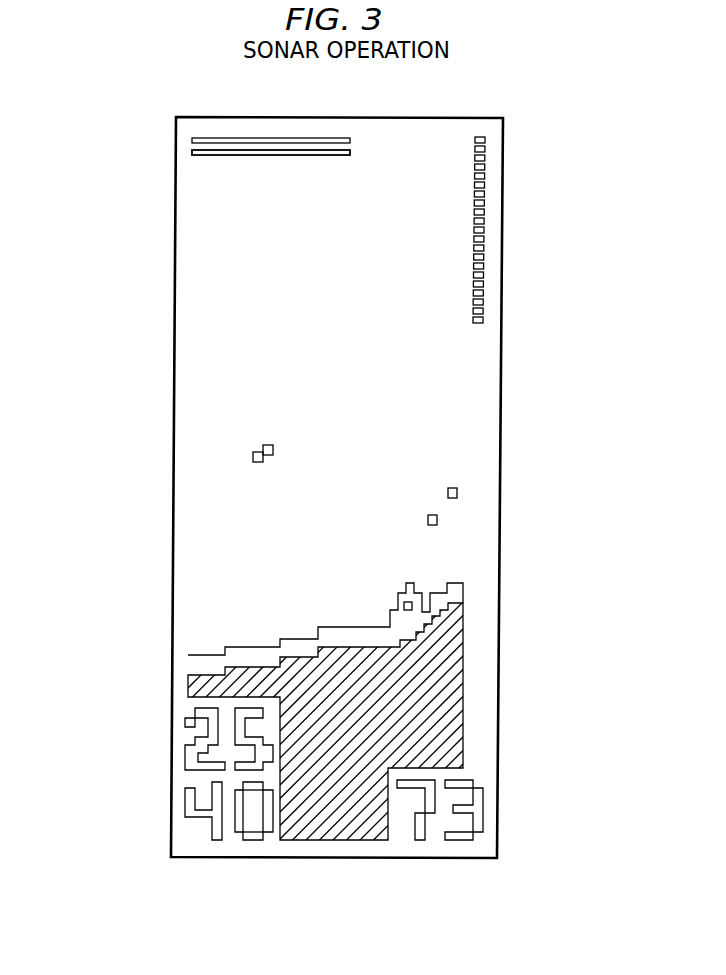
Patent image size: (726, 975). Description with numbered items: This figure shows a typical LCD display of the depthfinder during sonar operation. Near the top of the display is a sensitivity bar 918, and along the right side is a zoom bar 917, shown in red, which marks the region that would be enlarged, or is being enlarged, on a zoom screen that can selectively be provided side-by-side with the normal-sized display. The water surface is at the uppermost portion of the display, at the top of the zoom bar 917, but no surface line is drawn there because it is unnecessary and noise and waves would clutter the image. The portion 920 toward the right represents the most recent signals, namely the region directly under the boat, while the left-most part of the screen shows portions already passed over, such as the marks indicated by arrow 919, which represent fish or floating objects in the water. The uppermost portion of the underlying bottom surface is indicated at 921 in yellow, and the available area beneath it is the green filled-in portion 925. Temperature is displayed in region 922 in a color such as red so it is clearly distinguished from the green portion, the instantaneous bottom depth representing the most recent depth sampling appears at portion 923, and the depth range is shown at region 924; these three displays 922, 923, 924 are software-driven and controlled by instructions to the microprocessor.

The zoom bar 917 is at (488, 162).
The sensitivity bar 918 is at (267, 139).
The passed-over objects indication 919 is at (251, 452).
The most recent signals portion 920 is at (457, 498).
The uppermost portion of the underlying surface 921 is at (466, 596).
The temperature display region 922 is at (484, 797).
The instantaneous bottom depth portion 923 is at (181, 732).
The depth range region 924 is at (174, 807).
The green filled-in portion 925 is at (356, 806).